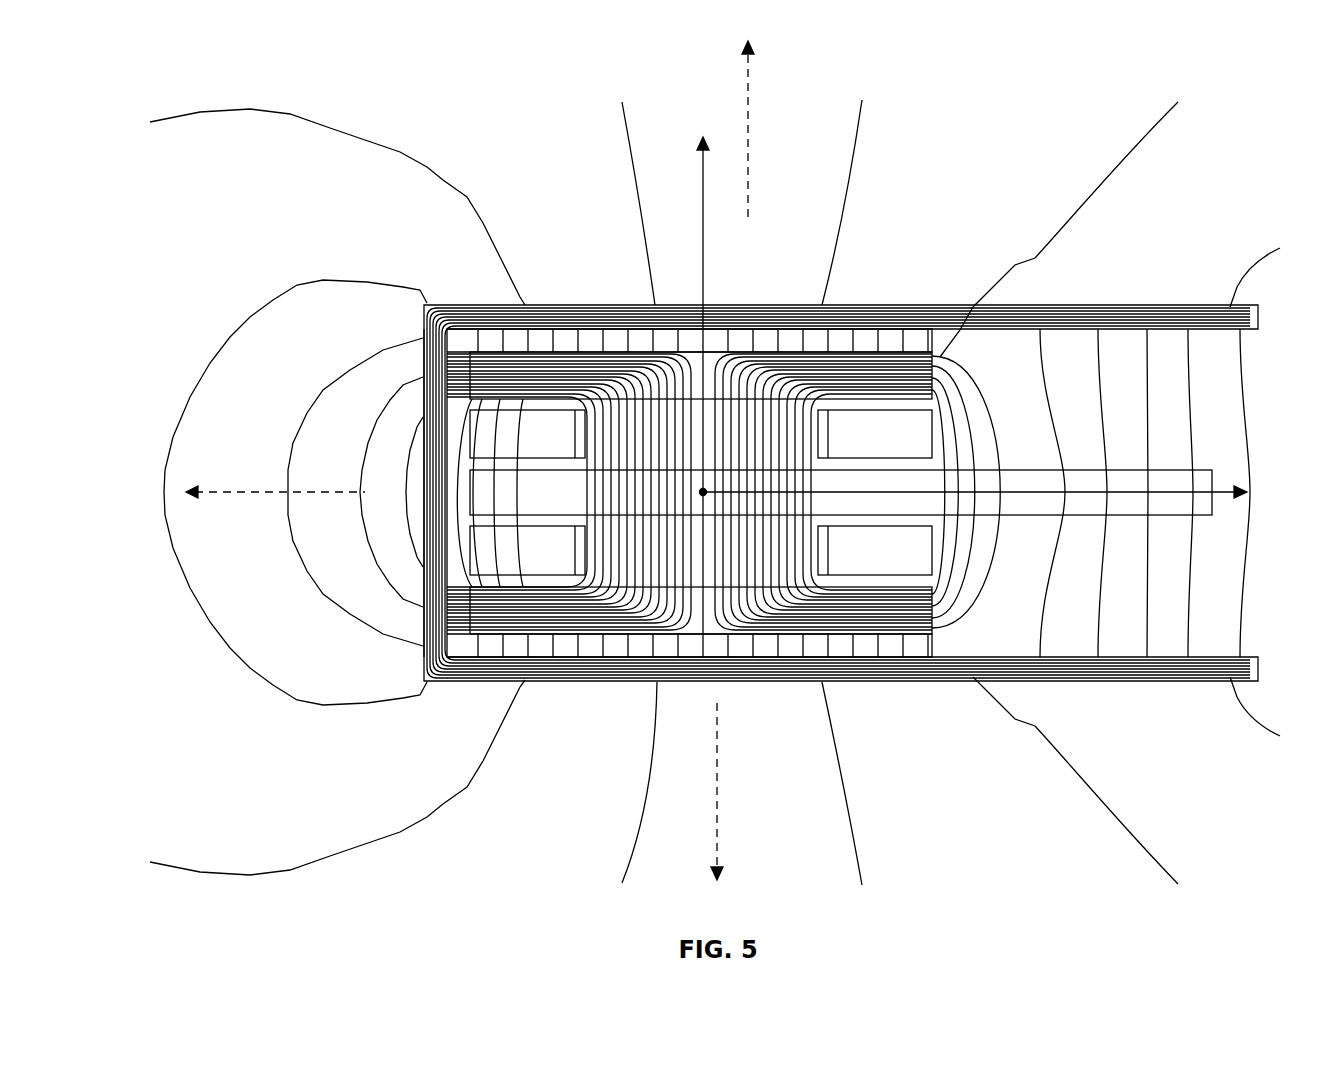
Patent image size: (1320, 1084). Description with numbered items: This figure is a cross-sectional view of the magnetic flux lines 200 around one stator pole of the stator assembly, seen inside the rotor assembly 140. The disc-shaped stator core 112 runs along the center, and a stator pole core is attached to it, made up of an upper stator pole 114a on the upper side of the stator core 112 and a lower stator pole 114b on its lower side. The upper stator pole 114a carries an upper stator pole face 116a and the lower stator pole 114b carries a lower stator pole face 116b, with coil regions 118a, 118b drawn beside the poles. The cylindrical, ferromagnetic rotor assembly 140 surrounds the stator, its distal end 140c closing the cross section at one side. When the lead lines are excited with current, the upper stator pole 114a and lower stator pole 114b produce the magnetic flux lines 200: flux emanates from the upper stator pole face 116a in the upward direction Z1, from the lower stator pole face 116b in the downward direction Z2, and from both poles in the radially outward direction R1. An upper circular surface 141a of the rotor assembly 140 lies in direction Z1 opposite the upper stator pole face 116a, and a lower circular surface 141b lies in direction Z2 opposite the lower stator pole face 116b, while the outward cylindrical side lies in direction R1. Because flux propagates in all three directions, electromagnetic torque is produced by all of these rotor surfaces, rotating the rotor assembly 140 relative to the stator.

The magnetic flux lines 200 is at (153, 90).
The stator core 112 is at (1103, 477).
The upper stator pole 114a is at (663, 433).
The lower stator pole 114b is at (665, 555).
The upper stator pole face 116a is at (858, 372).
The lower stator pole face 116b is at (858, 612).
The first coil 118a is at (905, 432).
The second coil 118b is at (905, 552).
The rotor assembly 140 is at (485, 318).
The distal end 140c is at (427, 473).
The upper circular surface 141a is at (790, 318).
The lower circular surface 141b is at (753, 680).
The radially outward direction R1 is at (272, 497).
The upward direction Z1 is at (748, 135).
The downward direction Z2 is at (718, 790).